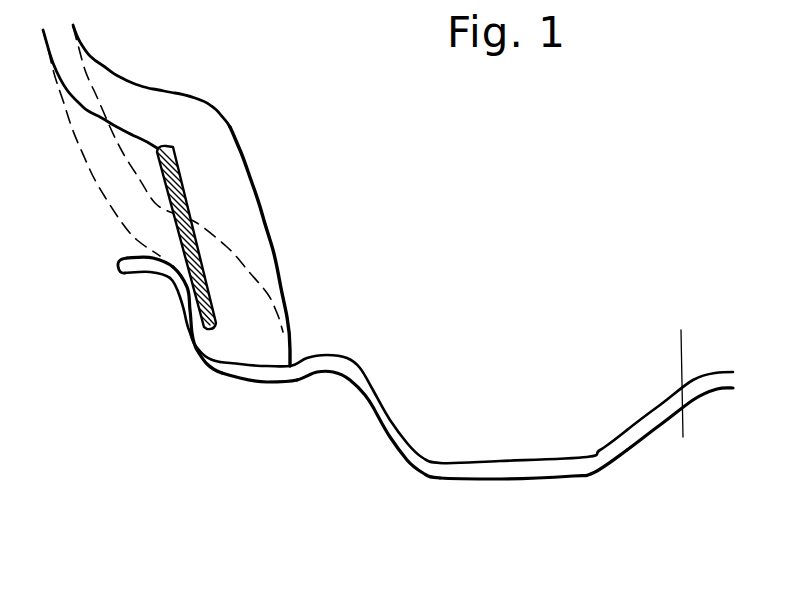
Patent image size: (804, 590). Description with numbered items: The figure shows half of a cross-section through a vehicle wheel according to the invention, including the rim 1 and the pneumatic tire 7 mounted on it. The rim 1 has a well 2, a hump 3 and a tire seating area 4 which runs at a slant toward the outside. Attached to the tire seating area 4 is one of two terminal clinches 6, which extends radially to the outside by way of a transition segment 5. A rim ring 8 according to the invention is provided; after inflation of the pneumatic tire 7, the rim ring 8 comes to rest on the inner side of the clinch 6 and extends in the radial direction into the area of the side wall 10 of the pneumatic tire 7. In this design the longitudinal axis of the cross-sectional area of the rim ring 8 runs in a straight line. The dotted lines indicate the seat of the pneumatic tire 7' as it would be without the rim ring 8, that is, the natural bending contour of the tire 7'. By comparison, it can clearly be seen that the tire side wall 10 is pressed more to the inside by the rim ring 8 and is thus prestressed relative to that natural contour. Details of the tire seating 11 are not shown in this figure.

The rim 1 is at (717, 378).
The well 2 is at (507, 460).
The hump 3 is at (353, 359).
The tire seating area 4 is at (263, 368).
The transition segment 5 is at (205, 364).
The terminal clinch 6 is at (150, 270).
The pneumatic tire 7 is at (136, 76).
The pneumatic tire seat without rim ring 7' is at (163, 179).
The rim ring 8 is at (182, 185).
The side wall 10 is at (193, 127).
The tire seating 11 is at (250, 315).